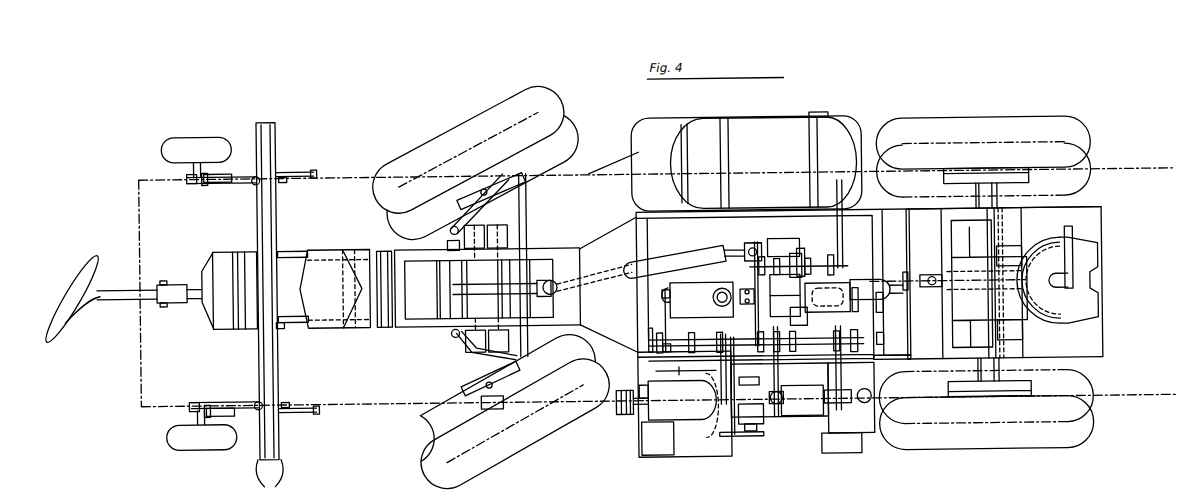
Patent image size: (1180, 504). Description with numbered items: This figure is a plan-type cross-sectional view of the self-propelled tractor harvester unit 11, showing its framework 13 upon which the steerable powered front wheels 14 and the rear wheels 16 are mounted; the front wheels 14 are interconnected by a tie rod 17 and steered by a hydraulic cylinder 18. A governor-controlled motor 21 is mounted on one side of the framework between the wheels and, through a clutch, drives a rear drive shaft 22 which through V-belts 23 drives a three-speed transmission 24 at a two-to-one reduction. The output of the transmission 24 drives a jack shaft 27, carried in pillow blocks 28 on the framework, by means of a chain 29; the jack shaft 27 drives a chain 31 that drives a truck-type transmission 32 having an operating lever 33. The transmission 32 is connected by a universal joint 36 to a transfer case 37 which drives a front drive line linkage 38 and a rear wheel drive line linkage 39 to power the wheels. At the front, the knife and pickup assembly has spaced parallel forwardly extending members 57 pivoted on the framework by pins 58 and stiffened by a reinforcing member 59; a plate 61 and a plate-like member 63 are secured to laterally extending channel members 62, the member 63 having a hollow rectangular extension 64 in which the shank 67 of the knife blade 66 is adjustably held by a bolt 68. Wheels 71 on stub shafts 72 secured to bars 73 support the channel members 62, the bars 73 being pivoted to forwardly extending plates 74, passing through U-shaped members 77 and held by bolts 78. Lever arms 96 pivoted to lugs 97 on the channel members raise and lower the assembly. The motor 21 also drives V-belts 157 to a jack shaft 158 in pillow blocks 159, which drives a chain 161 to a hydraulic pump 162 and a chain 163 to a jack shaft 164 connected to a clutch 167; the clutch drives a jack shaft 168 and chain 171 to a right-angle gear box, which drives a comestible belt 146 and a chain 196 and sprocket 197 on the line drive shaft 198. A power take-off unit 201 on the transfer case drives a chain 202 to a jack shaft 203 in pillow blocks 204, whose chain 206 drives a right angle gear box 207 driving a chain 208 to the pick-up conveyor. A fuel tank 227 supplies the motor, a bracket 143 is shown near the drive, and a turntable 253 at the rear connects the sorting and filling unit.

The tractor harvester unit 11 is at (366, 86).
The framework 13 is at (410, 327).
The front wheels 14 is at (476, 124).
The rear wheels 16 is at (1050, 123).
The tie rod 17 is at (530, 215).
The hydraulic cylinder 18 is at (450, 230).
The motor 21 is at (812, 436).
The rear drive shaft 22 is at (690, 462).
The V-belts 23 is at (620, 418).
The transmission 24 is at (656, 430).
The jack shaft 27 is at (690, 341).
The pillow blocks 28 is at (648, 331).
The chain 29 is at (720, 342).
The chain 31 is at (650, 317).
The transmission 32 is at (694, 315).
The operating lever 33 is at (713, 298).
The universal joint 36 is at (753, 286).
The transfer case 37 is at (793, 293).
The front drive line linkage 38 is at (690, 262).
The rear wheel drive line linkage 39 is at (828, 311).
The forwardly extending members 57 is at (310, 248).
The pins 58 is at (380, 328).
The reinforcing member 59 is at (330, 268).
The plate 61 is at (284, 324).
The channel members 62 is at (268, 312).
The plate-like member 63 is at (232, 252).
The hollow rectangular extension 64 is at (192, 286).
The knife blade 66 is at (54, 320).
The shank 67 is at (133, 296).
The bolt 68 is at (163, 278).
The wheels 71 is at (198, 135).
The stub shafts 72 is at (190, 172).
The bars 73 is at (192, 182).
The forwardly extending plates 74 is at (238, 181).
The U-shaped members 77 is at (222, 172).
The bolts 78 is at (207, 182).
The lever arms 96 is at (306, 166).
The lugs 97 is at (284, 180).
The coupling block 143 is at (748, 306).
The comestible belt 146 is at (771, 242).
The V-belts 157 is at (866, 392).
The jack shaft 158 is at (786, 357).
The pillow blocks 159 is at (781, 389).
The chain 161 is at (780, 342).
The hydraulic pump 162 is at (800, 321).
The chain 163 is at (800, 250).
The jack shaft 164 is at (792, 262).
The clutch 167 is at (785, 302).
The jack shaft 168 is at (836, 276).
The chain 171 is at (845, 247).
The chain 196 is at (908, 222).
The sprocket 197 is at (885, 302).
The line drive shaft 198 is at (931, 288).
The power take-off unit 201 is at (889, 283).
The chain 202 is at (880, 340).
The jack shaft 203 is at (915, 361).
The pillow blocks 204 is at (766, 358).
The chain 206 is at (762, 396).
The right angle gear box 207 is at (755, 432).
The chain 208 is at (740, 438).
The fuel tank 227 is at (785, 160).
The turntable 253 is at (1096, 305).